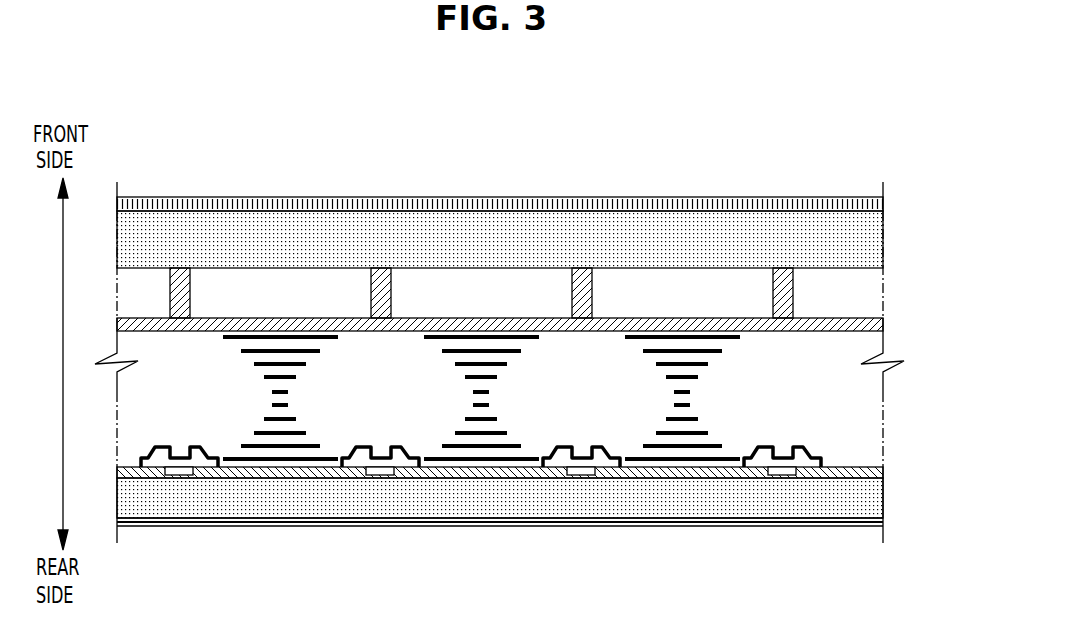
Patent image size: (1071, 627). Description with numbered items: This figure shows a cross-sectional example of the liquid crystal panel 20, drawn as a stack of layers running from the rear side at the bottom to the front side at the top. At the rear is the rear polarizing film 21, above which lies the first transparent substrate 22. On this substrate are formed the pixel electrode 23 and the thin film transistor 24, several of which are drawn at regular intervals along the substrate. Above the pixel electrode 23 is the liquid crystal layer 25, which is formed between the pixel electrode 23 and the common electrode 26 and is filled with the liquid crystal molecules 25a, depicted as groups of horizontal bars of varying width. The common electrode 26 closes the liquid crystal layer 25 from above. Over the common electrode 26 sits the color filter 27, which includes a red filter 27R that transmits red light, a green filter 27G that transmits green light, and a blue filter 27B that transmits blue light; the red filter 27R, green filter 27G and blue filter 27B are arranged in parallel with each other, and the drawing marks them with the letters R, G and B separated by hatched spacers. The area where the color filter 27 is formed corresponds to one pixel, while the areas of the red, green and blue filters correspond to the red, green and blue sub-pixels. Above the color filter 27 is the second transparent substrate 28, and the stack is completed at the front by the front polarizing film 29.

The liquid crystal panel 20 is at (806, 165).
The rear polarizing film 21 is at (878, 525).
The first transparent substrate 22 is at (878, 503).
The pixel electrode 23 is at (880, 473).
The thin film transistor 24 is at (800, 458).
The liquid crystal layer 25 is at (878, 406).
The liquid crystal molecules 25a is at (478, 463).
The common electrode 26 is at (880, 327).
The color filter 27 is at (878, 291).
The red filter 27R is at (330, 283).
The green filter 27G is at (538, 283).
The blue filter 27B is at (732, 283).
The second transparent substrate 28 is at (880, 242).
The front polarizing film 29 is at (885, 211).